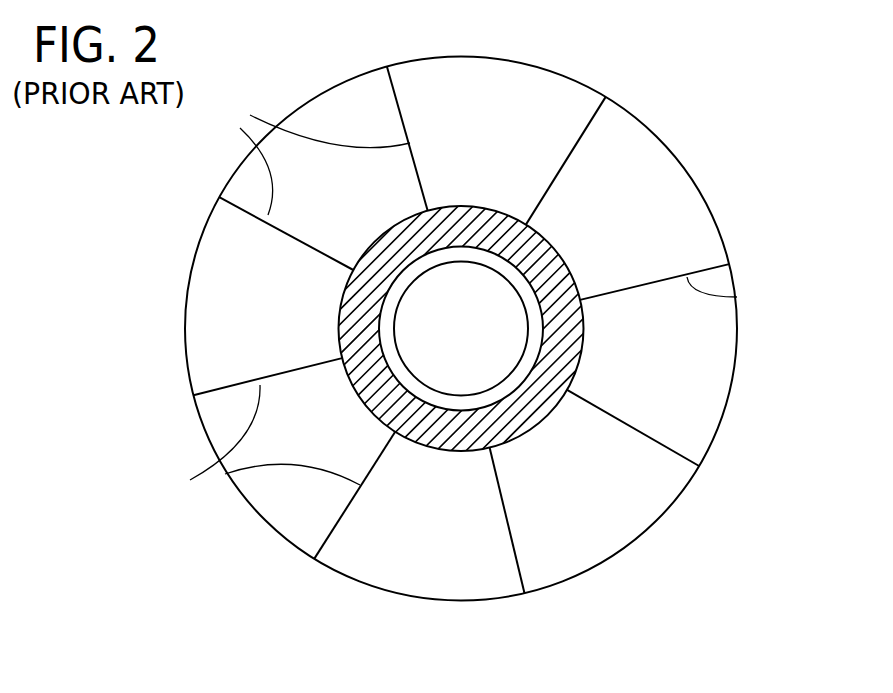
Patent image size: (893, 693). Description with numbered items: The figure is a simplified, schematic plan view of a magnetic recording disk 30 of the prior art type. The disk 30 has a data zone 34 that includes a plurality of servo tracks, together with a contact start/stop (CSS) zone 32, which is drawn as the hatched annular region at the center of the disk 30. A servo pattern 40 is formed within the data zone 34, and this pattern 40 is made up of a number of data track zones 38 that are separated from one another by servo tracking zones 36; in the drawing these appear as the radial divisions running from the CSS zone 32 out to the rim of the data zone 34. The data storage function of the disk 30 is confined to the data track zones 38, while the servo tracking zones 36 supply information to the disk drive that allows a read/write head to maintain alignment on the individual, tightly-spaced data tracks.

The magnetic recording disk 30 is at (469, 308).
The contact start/stop (CSS) zone 32 is at (570, 353).
The data zone 34 is at (602, 485).
The servo tracking zones 36 is at (782, 297).
The data track zones 38 is at (377, 112).
The servo pattern 40 is at (285, 313).